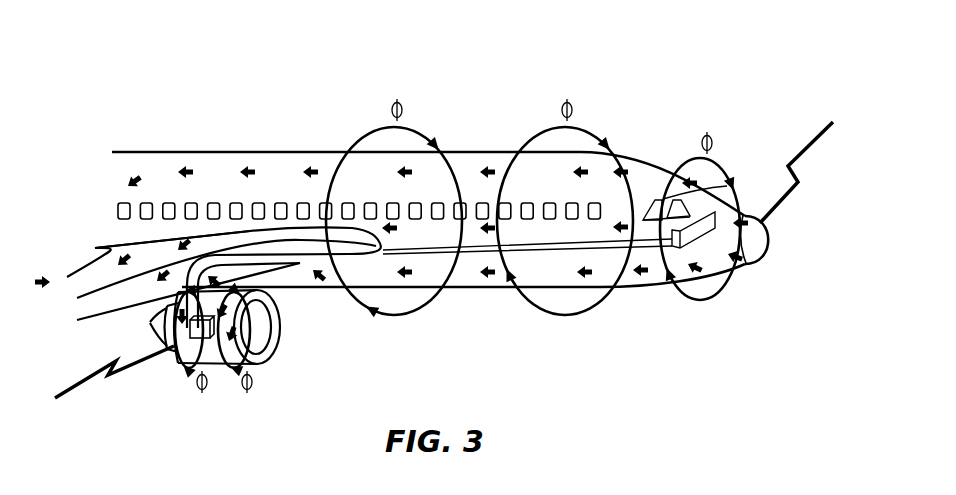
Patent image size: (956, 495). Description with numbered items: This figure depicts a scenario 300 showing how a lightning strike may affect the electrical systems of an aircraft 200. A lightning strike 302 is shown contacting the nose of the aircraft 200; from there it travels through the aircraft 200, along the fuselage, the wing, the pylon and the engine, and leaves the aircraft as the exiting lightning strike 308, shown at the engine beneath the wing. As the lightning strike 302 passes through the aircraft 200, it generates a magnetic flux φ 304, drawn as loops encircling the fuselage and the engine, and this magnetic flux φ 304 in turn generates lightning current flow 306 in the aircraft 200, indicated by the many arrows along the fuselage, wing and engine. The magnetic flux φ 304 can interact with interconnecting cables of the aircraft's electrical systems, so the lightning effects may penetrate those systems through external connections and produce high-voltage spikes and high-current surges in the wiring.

The scenario 300 is at (677, 35).
The aircraft 200 is at (208, 170).
The lightning strike 302 is at (808, 158).
The magnetic flux φ 304 is at (372, 132).
The lightning current flow 306 is at (111, 236).
The exiting lightning strike 308 is at (133, 373).